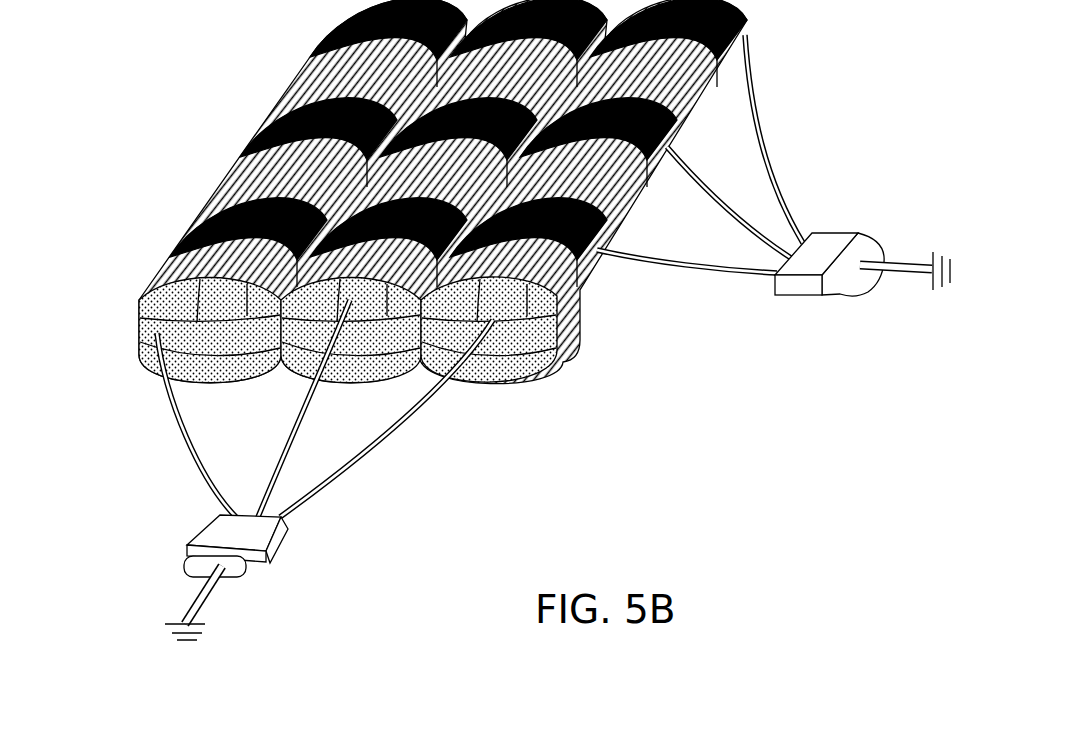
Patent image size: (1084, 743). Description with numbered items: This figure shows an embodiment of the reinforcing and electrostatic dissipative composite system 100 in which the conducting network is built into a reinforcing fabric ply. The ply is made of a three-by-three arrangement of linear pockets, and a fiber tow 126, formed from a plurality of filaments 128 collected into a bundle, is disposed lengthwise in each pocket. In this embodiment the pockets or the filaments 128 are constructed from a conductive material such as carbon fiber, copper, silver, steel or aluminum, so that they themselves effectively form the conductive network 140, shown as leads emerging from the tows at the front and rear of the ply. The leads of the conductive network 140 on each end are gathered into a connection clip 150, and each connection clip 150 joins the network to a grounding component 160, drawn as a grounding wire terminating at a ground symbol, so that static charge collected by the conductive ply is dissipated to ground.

The reinforcing and electrostatic dissipative (ESD) composite system 100 is at (193, 86).
The fiber tow 126 is at (523, 357).
The filaments 128 is at (221, 183).
The conductive network 140 is at (785, 149).
The connection clip 150 is at (845, 211).
The grounding component 160 is at (889, 296).